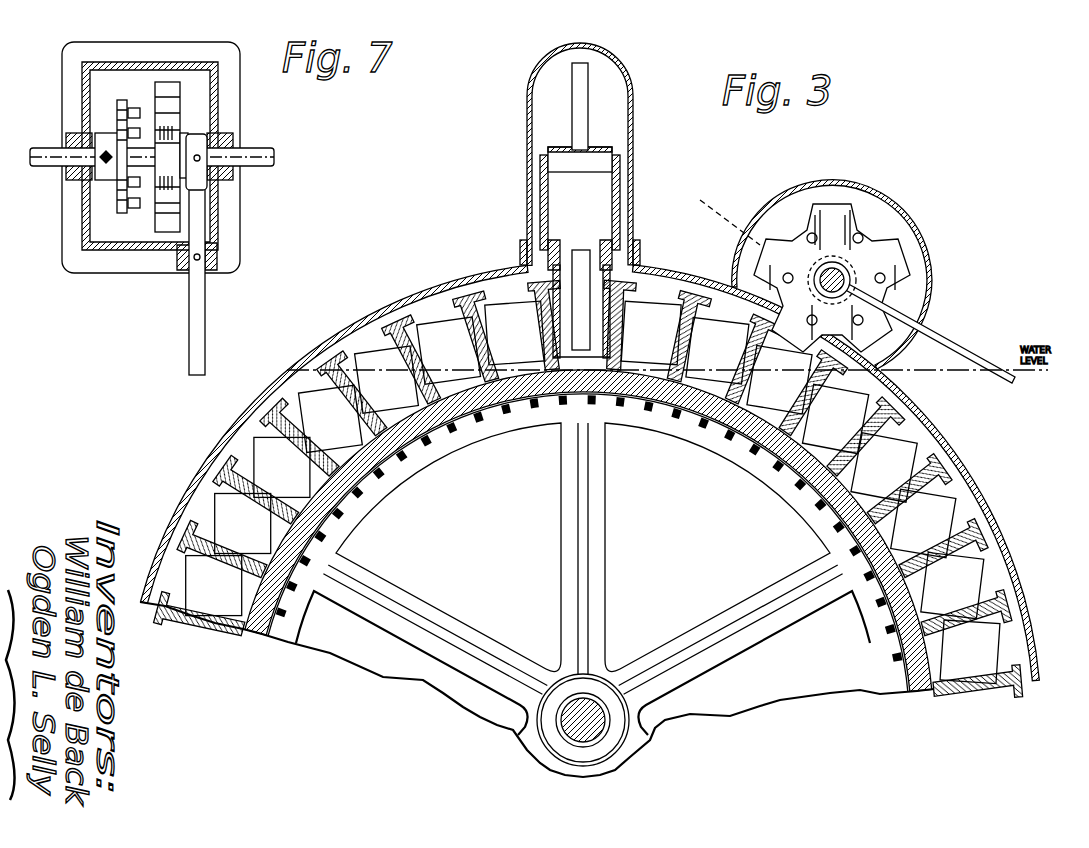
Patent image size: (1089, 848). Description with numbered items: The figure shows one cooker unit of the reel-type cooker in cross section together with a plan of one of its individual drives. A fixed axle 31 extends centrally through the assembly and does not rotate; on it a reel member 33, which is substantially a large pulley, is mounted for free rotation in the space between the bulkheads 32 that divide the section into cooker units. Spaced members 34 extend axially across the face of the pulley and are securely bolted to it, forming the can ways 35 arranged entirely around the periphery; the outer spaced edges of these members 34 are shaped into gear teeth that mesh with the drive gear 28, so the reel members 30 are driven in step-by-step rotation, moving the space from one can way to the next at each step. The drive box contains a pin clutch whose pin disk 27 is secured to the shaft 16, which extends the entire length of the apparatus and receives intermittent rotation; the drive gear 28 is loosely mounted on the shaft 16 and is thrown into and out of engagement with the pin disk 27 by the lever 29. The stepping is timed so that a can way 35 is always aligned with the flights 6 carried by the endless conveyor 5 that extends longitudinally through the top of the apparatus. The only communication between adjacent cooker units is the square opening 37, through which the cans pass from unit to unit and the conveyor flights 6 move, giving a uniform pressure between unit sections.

In FIG. 3, the endless conveyor 5 is at (606, 152).
In FIG. 3, the flights 6 is at (586, 112).
In FIG. 7, the shaft 16 is at (46, 166).
In FIG. 3, the shaft 16 is at (850, 278).
In FIG. 7, the pin disk 27 is at (121, 195).
In FIG. 7, the drive gear 28 is at (165, 210).
In FIG. 3, the drive gear 28 is at (790, 250).
In FIG. 7, the lever 29 is at (192, 314).
In FIG. 3, the lever 29 is at (980, 362).
In FIG. 3, the reel members 30 is at (843, 470).
In FIG. 3, the axle 31 is at (595, 708).
In FIG. 3, the bulkheads 32 is at (658, 268).
In FIG. 3, the reel member 33 is at (597, 514).
In FIG. 3, the spaced members 34 is at (393, 320).
In FIG. 3, the can ways 35 is at (593, 492).
In FIG. 3, the square opening 37 is at (634, 250).